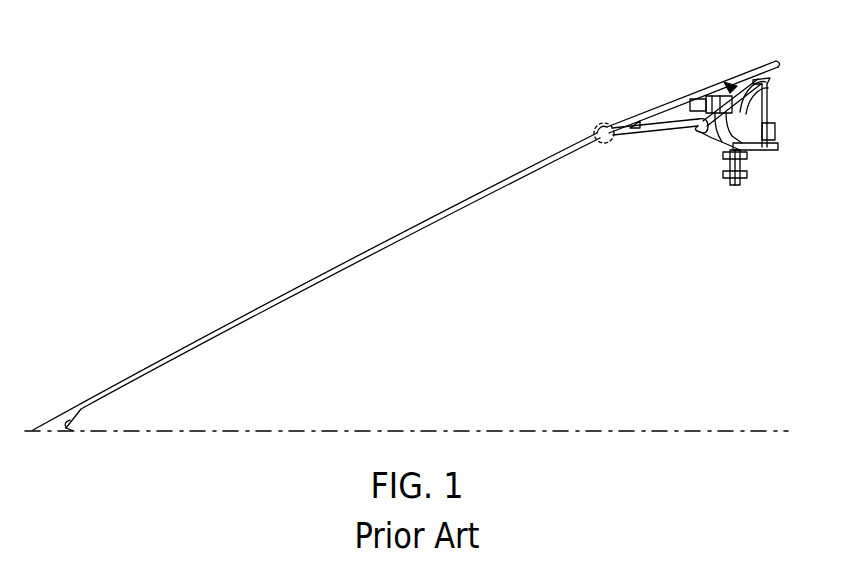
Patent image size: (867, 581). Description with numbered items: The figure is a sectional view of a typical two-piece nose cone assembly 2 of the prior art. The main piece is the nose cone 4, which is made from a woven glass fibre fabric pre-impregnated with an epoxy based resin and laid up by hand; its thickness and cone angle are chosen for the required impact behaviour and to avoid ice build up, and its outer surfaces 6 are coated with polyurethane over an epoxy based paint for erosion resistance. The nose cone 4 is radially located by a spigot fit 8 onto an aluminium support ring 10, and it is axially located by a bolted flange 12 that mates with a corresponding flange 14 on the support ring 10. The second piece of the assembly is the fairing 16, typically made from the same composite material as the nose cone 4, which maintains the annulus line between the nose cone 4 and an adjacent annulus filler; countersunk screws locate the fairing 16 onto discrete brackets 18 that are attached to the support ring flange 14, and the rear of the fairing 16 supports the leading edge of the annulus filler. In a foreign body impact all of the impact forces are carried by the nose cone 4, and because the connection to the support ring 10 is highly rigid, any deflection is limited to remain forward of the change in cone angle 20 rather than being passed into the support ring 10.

The nose cone assembly 2 is at (346, 174).
The nose cone 4 is at (290, 289).
The outer surfaces 6 is at (423, 220).
The spigot fit 8 is at (698, 135).
The support ring 10 is at (730, 136).
The bolted flange 12 is at (713, 87).
The flange 14 is at (755, 83).
The fairing 16 is at (733, 84).
The brackets 18 is at (740, 98).
The change in cone angle 20 is at (606, 122).